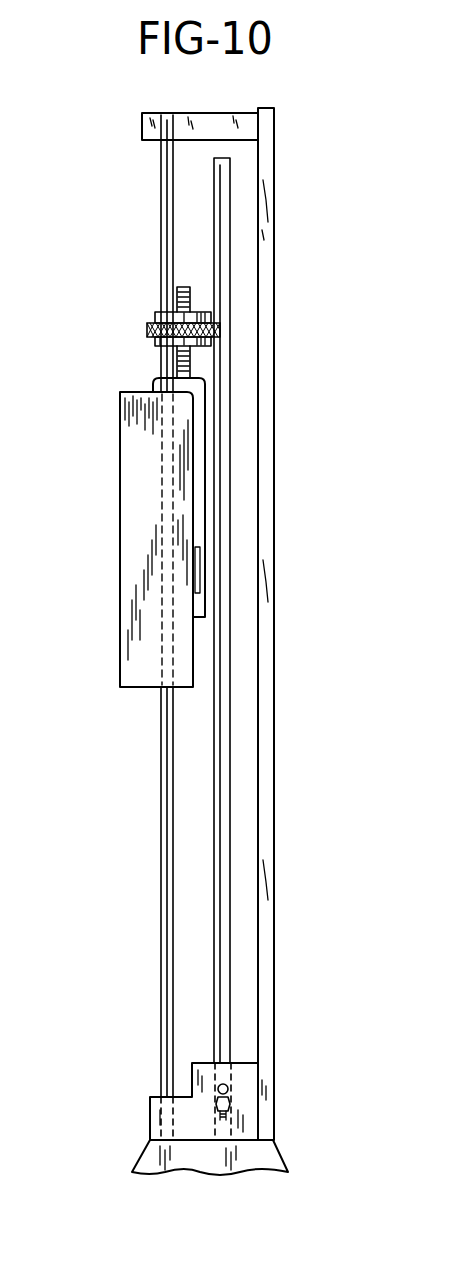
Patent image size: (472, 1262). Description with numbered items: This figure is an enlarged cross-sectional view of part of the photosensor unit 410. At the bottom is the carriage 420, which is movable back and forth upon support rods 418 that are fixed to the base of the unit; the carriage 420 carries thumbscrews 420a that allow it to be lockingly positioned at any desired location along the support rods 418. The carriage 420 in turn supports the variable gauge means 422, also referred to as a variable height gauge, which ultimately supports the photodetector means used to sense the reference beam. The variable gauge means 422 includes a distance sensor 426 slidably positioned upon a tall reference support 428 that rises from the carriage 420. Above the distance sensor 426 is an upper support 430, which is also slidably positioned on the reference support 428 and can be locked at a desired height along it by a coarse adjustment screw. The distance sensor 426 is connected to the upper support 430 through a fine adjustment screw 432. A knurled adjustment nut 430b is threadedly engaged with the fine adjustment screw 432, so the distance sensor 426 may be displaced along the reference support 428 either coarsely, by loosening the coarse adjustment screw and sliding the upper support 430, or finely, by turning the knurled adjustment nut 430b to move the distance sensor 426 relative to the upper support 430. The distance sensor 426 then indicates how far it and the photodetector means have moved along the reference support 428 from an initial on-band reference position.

The photosensor unit 410 is at (114, 704).
The support rods 418 is at (231, 166).
The carriage 420 is at (150, 1109).
The thumbscrews 420a is at (229, 1091).
The variable gauge means 422 is at (130, 497).
The distance sensor 426 is at (135, 640).
The reference support 428 is at (160, 838).
The upper support 430 is at (210, 342).
The knurled adjustment nut 430b is at (220, 332).
The fine adjustment screw 432 is at (177, 292).